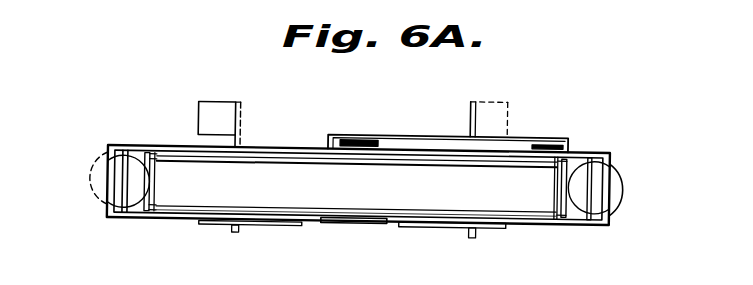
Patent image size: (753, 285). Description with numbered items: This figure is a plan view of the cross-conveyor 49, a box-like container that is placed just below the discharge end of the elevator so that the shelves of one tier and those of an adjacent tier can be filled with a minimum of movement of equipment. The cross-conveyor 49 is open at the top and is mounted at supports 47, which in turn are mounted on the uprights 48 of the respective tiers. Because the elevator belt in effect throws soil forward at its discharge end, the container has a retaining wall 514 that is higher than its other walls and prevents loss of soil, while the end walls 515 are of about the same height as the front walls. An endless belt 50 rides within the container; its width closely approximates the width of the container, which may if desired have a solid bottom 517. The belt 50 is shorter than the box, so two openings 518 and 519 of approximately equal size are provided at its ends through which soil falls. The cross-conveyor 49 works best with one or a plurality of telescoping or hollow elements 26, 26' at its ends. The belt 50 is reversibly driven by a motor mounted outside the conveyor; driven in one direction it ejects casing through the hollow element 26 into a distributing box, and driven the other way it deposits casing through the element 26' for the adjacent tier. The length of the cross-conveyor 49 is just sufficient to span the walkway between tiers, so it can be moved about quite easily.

The telescoping or hollow element 26 is at (651, 196).
The telescoping or hollow element 26' is at (63, 174).
The support 47 is at (247, 108).
The upright 48 is at (218, 97).
The cross-conveyor 49 is at (380, 96).
The endless belt 50 is at (283, 178).
The retaining wall 514 is at (455, 110).
The end wall 515 is at (108, 200).
The solid bottom 517 is at (258, 206).
The opening 518 is at (617, 105).
The opening 519 is at (137, 159).